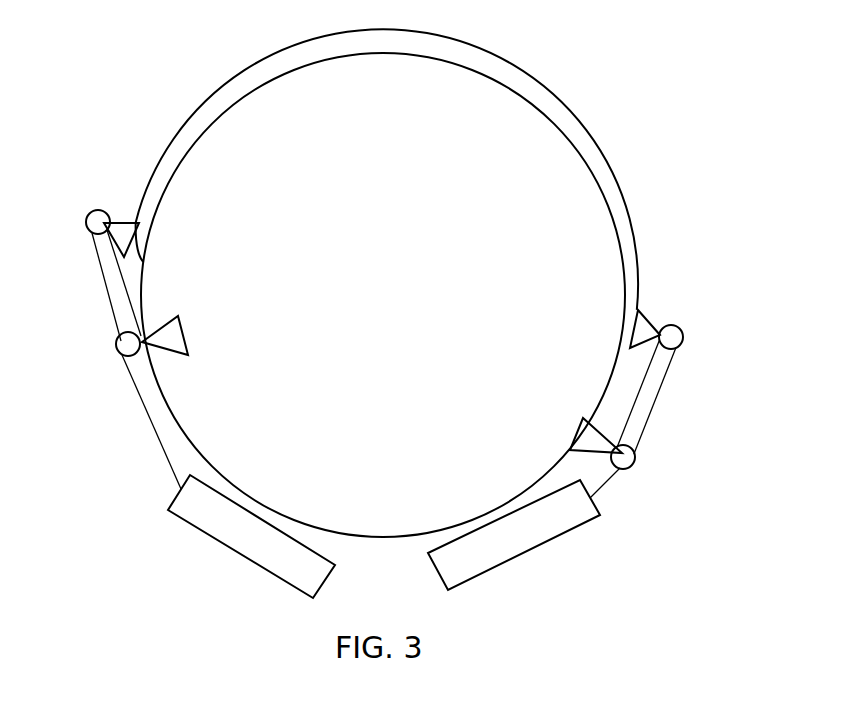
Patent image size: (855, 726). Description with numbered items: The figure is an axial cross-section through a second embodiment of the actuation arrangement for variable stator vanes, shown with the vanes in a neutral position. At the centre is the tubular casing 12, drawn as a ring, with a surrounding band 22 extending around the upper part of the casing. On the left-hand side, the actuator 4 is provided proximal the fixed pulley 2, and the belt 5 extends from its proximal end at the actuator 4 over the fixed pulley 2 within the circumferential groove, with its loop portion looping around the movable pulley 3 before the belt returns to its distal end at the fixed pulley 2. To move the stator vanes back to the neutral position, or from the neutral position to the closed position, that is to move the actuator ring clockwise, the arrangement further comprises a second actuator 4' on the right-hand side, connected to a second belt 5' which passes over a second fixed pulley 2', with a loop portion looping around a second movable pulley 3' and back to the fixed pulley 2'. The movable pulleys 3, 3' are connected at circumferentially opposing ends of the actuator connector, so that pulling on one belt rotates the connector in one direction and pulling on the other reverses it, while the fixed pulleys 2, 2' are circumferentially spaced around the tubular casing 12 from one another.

The tubular casing 12 is at (483, 75).
The band / cover 22 is at (248, 68).
The movable pulley 3 is at (92, 200).
The belt 5 is at (100, 285).
The fixed pulley 2 is at (136, 402).
The actuator 4 is at (251, 543).
The second movable pulley 3' is at (689, 300).
The second belt 5' is at (669, 397).
The second fixed pulley 2' is at (627, 458).
The second actuator 4' is at (514, 541).